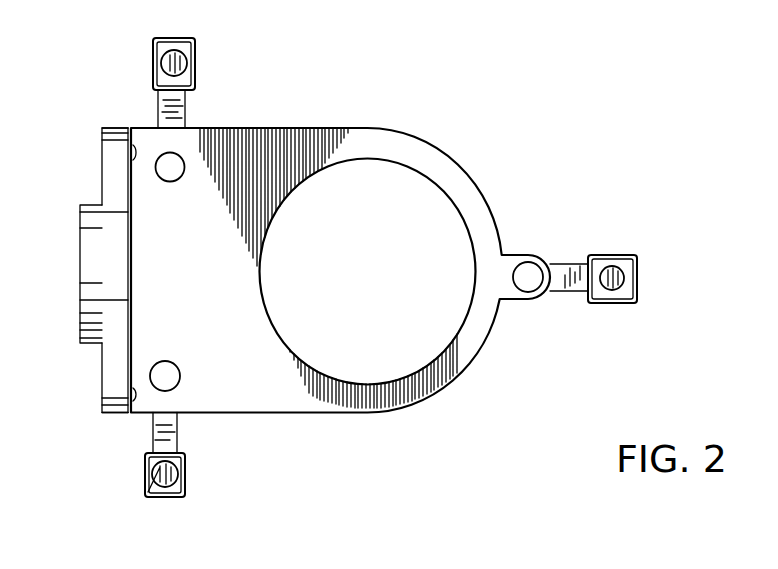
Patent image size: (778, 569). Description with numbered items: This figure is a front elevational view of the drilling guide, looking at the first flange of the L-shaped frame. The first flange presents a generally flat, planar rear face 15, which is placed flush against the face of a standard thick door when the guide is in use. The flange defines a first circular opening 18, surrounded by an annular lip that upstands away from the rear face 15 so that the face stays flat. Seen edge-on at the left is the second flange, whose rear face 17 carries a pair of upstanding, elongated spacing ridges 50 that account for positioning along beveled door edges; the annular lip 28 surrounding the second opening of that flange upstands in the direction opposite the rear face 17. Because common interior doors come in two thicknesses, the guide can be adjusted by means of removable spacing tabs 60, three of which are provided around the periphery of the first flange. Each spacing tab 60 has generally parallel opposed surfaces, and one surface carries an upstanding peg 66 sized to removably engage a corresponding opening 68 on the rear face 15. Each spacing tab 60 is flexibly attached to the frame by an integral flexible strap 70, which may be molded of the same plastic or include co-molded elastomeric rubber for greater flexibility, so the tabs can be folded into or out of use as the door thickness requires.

The rear face 15 is at (395, 175).
The rear face 17 is at (141, 127).
The first circular opening 18 is at (403, 258).
The annular lip 28 is at (78, 266).
The spacing ridges 50 is at (130, 165).
The spacing tabs 60 is at (197, 62).
The peg 66 is at (178, 58).
The opening 68 is at (172, 170).
The flexible strap 70 is at (188, 110).